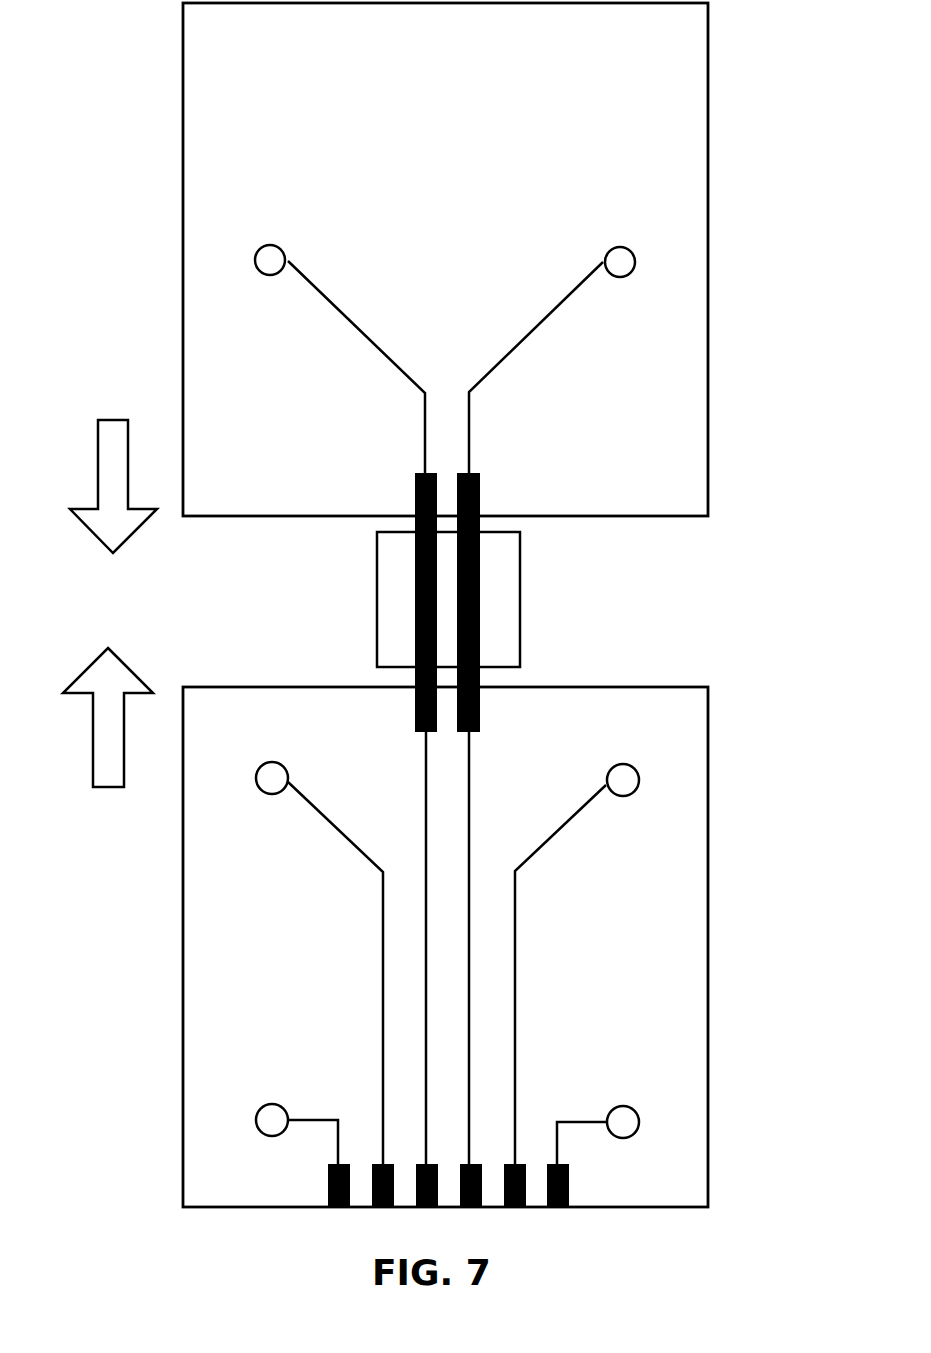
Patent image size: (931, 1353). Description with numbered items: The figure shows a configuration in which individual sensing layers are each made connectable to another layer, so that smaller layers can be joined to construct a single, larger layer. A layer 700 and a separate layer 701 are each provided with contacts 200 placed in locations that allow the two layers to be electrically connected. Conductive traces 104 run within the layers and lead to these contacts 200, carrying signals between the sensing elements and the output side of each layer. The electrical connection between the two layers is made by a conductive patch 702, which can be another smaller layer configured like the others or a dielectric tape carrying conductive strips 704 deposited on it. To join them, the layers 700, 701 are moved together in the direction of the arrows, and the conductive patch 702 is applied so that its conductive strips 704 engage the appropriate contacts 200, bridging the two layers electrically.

The layer 700 is at (480, 947).
The layer 701 is at (480, 259).
The conductive patch 702 is at (479, 599).
The conductive strips 704 is at (415, 602).
The contacts 200 is at (484, 840).
The conductive traces 104 is at (447, 712).